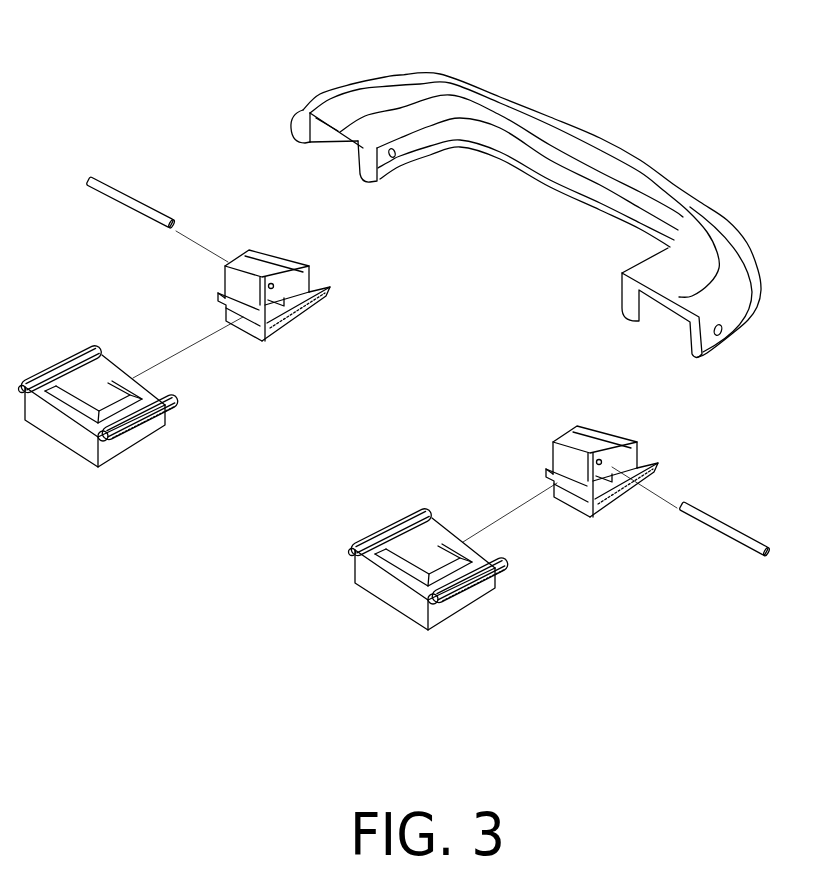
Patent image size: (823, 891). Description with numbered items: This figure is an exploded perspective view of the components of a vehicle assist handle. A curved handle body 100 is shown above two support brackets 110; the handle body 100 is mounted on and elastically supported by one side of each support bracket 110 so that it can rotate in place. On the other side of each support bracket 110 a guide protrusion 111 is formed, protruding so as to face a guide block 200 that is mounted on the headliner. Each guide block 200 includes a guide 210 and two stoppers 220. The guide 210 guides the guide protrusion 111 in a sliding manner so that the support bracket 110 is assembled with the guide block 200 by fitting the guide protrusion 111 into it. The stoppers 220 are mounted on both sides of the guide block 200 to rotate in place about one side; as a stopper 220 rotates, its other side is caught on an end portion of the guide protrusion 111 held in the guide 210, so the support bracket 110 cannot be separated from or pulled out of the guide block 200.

The handle body 100 is at (589, 165).
The support bracket 110 is at (279, 257).
The guide protrusion 111 is at (324, 300).
The guide block 200 is at (72, 442).
The guide 210 is at (108, 356).
The stopper 220 is at (43, 372).